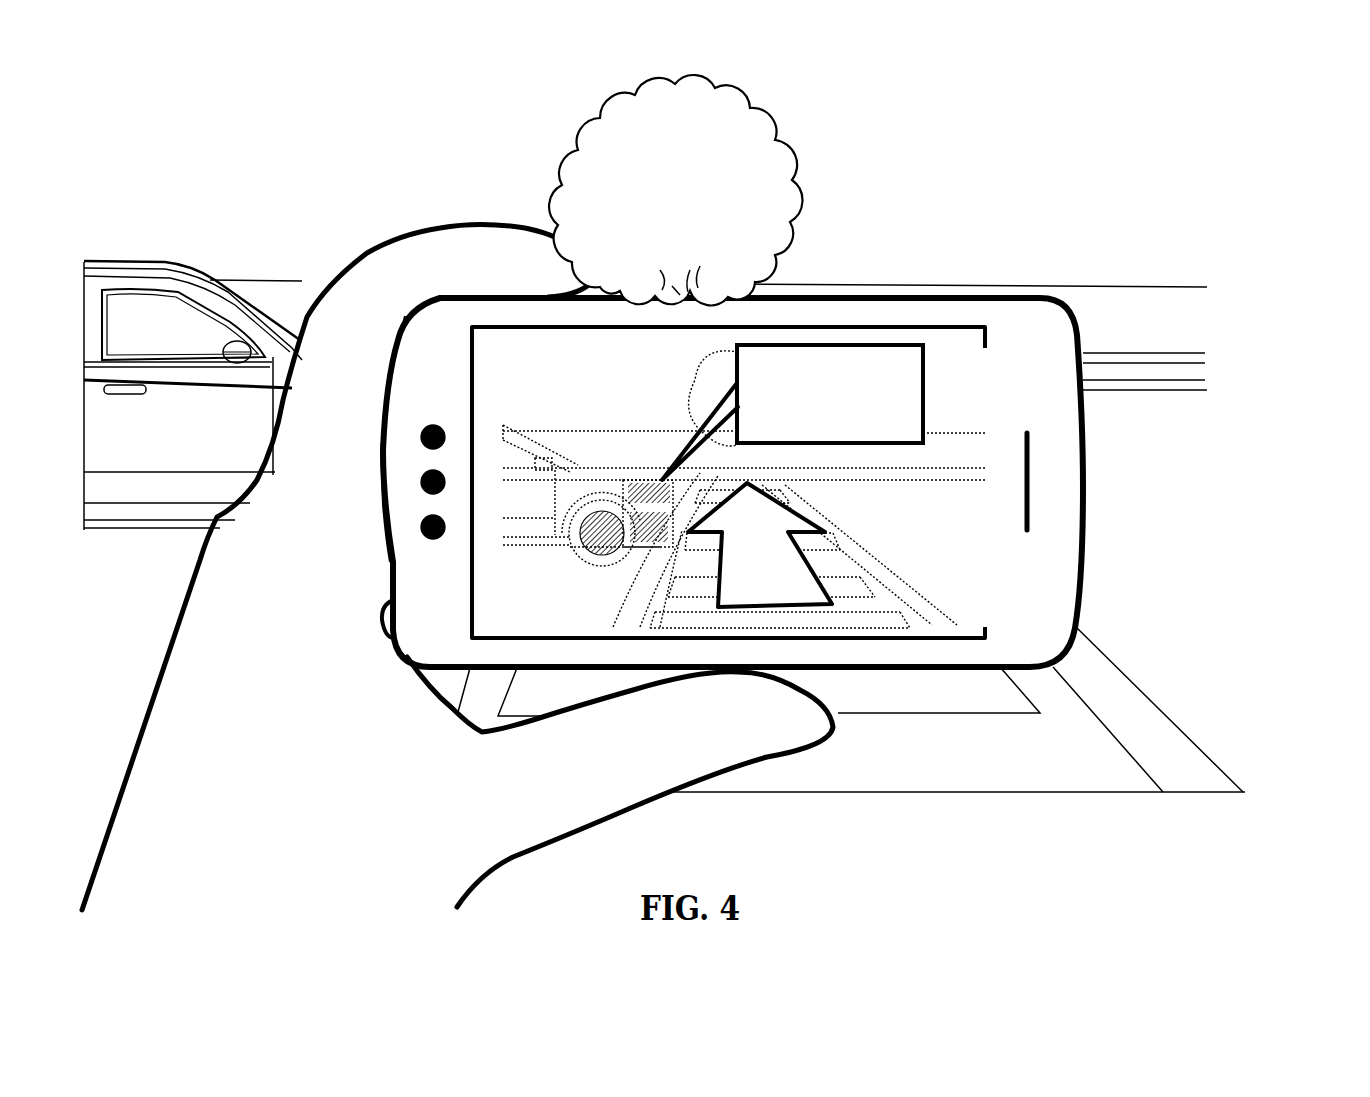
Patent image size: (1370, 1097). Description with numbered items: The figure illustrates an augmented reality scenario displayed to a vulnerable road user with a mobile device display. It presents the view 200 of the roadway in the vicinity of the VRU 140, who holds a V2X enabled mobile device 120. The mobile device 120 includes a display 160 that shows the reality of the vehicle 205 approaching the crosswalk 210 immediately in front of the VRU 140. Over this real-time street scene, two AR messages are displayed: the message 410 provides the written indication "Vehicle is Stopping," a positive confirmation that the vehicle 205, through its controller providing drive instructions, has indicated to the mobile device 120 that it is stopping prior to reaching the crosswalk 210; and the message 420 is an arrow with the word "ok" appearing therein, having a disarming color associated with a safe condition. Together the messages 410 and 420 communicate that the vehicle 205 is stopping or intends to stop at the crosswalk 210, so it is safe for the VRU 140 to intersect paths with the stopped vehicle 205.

The view 200 is at (1222, 158).
The vehicle 205 is at (176, 262).
The VRU 140 is at (217, 688).
The mobile device 120 is at (1083, 350).
The display 160 is at (916, 328).
The message 410 is at (793, 345).
The message 420 is at (757, 608).
The crosswalk 210 is at (1117, 688).